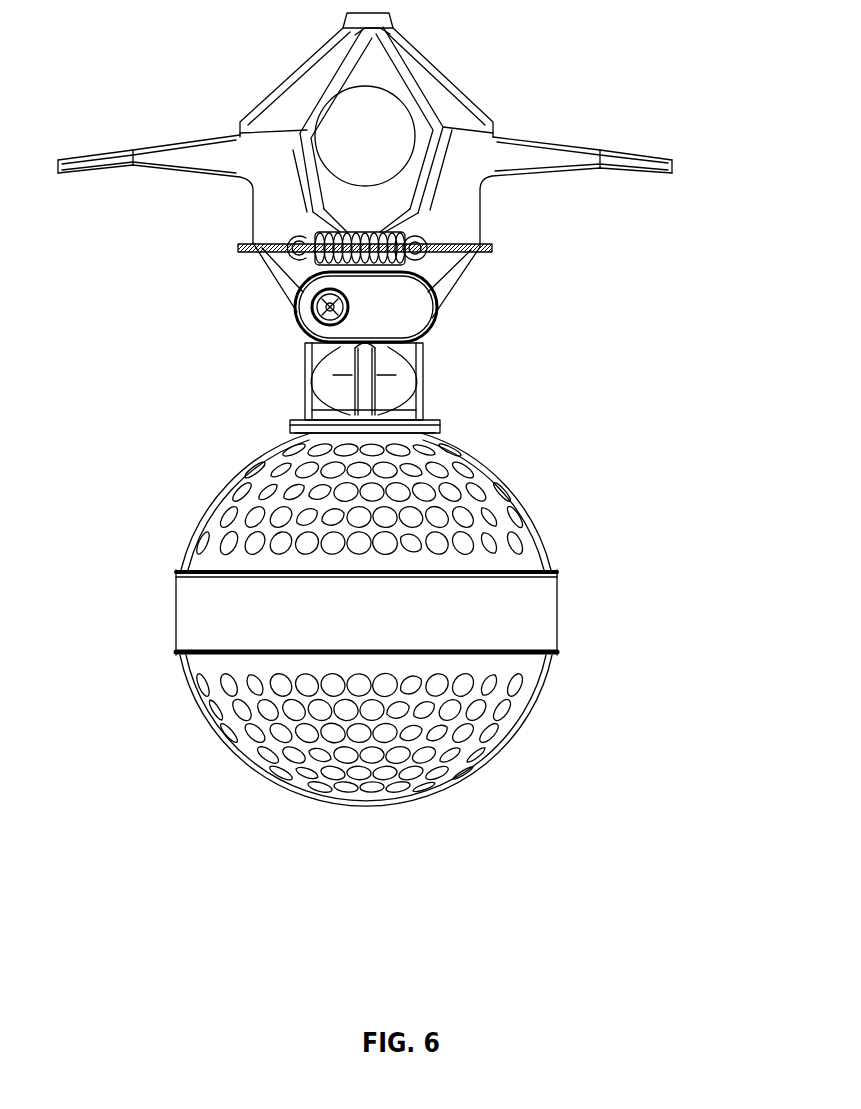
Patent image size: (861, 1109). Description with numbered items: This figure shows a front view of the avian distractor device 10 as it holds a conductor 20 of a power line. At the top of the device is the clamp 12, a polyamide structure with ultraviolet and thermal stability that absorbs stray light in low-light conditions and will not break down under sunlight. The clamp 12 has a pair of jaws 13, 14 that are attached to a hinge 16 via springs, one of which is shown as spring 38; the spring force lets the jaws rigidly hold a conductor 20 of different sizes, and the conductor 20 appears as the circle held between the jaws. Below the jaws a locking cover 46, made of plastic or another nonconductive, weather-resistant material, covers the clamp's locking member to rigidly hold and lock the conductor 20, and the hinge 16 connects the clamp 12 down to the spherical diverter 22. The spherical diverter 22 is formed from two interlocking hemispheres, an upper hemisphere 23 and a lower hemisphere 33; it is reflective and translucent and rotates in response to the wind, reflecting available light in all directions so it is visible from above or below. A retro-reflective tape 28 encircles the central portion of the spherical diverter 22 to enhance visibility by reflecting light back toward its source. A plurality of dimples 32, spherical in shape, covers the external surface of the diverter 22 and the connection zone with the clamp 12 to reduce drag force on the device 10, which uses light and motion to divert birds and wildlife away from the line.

The avian distractor device 10 is at (525, 43).
The clamp 12 is at (418, 72).
The jaw 13 is at (185, 150).
The jaw 14 is at (592, 148).
The hinge 16 is at (422, 400).
The conductor 20 is at (348, 133).
The spherical diverter 22 is at (485, 492).
The interlocking hemisphere 23 is at (535, 543).
The retro-reflective tape 28 is at (543, 602).
The dimples 32 is at (445, 450).
The lower hemisphere 33 is at (518, 717).
The spring 38 is at (422, 250).
The locking cover 46 is at (427, 307).